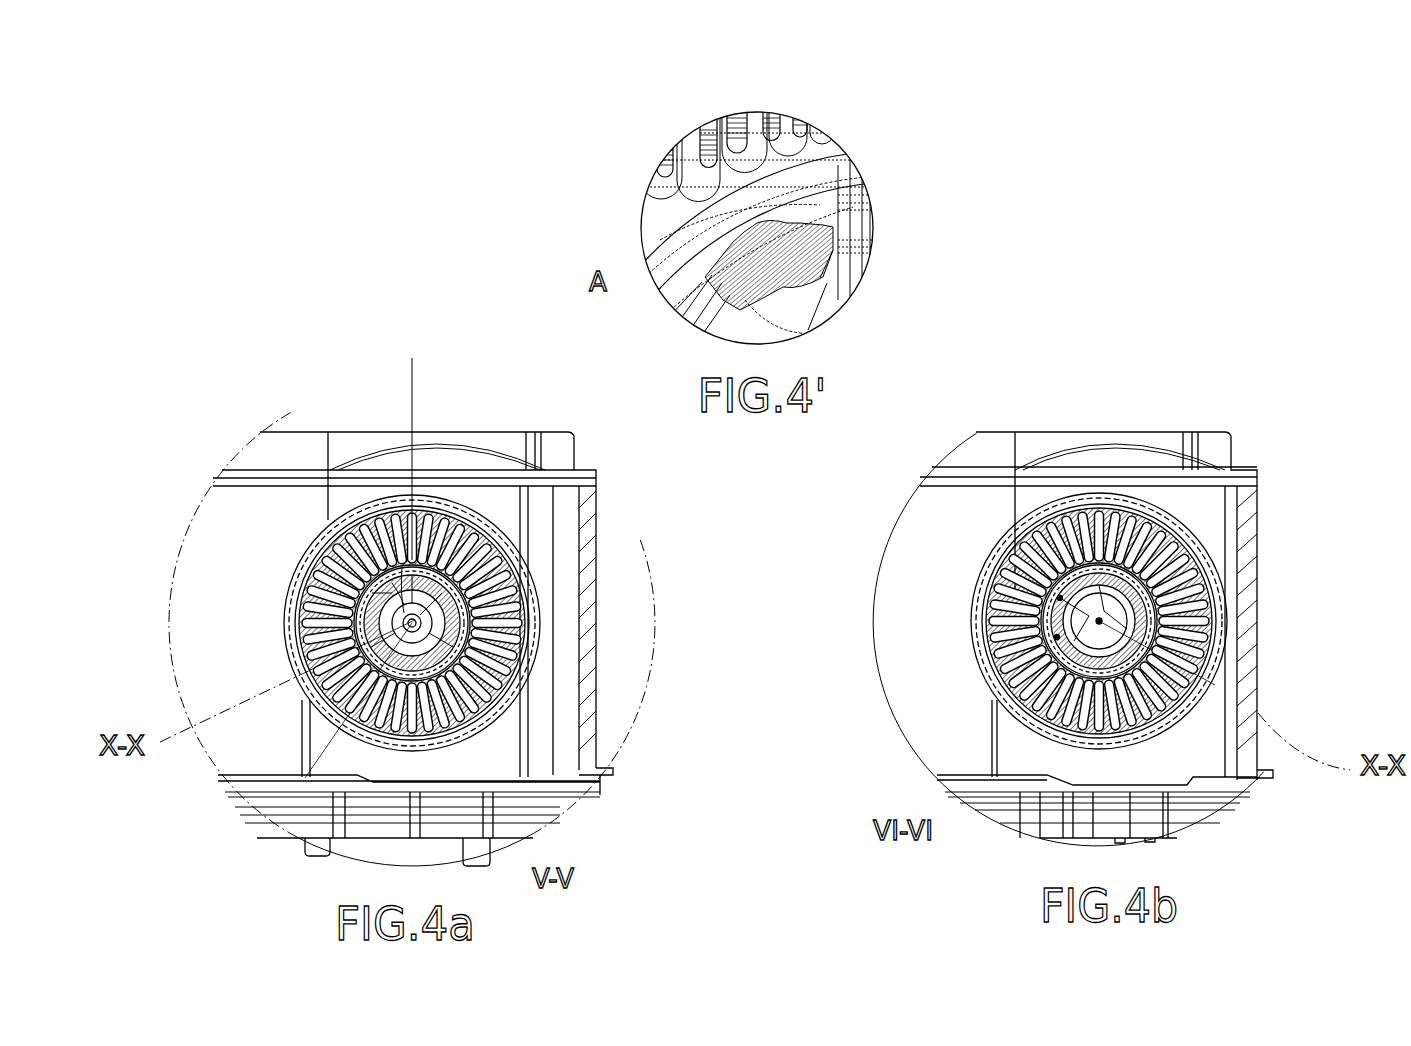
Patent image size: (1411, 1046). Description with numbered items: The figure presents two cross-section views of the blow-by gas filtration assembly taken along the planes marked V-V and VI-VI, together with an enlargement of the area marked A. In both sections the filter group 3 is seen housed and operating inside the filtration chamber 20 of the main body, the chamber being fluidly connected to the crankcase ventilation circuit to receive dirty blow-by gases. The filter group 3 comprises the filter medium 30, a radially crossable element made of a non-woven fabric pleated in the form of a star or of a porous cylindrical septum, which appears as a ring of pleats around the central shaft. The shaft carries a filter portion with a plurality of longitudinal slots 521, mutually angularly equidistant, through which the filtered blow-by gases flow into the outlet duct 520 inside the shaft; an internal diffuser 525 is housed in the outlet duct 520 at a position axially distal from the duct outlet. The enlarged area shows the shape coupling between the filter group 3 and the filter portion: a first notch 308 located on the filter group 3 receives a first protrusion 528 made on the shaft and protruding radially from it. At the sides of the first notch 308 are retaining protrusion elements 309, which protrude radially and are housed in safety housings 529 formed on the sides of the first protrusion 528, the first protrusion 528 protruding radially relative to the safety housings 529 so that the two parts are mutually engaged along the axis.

In FIG. 4A, the filter group 3 is at (306, 536).
In FIG. 4B, the filter group 3 is at (958, 611).
In FIG. 4A, the filtration chamber 20 is at (232, 560).
In FIG. 4B, the filtration chamber 20 is at (935, 722).
In FIG. 4A, the filter medium 30 is at (355, 528).
In FIG. 4B, the filter medium 30 is at (1010, 565).
In FIG. 4', the filter medium 30 is at (750, 122).
In FIG. 4', the first notch 308 is at (767, 213).
In FIG. 4', the retaining protrusion element 309 is at (800, 220).
In FIG. 4A, the outlet duct 520 is at (497, 713).
In FIG. 4B, the outlet duct 520 is at (1173, 517).
In FIG. 4A, the longitudinal slots 521 is at (537, 633).
In FIG. 4B, the longitudinal slots 521 is at (1062, 507).
In FIG. 4', the longitudinal slots 521 is at (720, 320).
In FIG. 4A, the internal diffuser 525 is at (305, 778).
In FIG. 4', the first protrusion 528 is at (828, 284).
In FIG. 4', the safety housings 529 is at (820, 225).